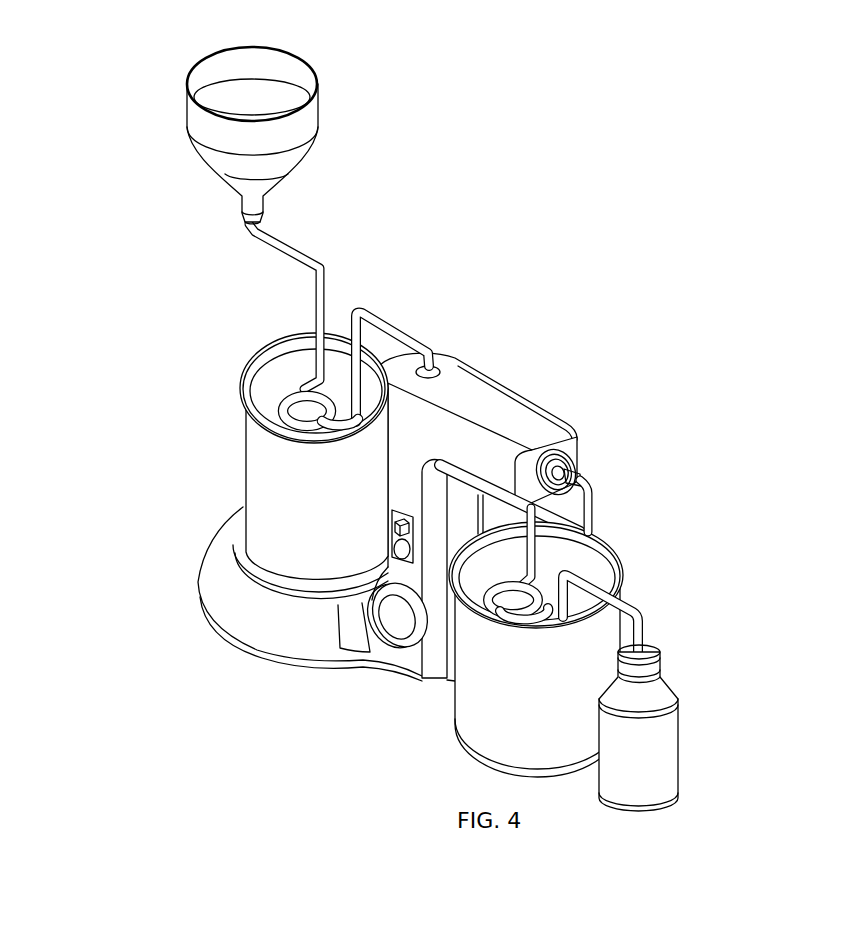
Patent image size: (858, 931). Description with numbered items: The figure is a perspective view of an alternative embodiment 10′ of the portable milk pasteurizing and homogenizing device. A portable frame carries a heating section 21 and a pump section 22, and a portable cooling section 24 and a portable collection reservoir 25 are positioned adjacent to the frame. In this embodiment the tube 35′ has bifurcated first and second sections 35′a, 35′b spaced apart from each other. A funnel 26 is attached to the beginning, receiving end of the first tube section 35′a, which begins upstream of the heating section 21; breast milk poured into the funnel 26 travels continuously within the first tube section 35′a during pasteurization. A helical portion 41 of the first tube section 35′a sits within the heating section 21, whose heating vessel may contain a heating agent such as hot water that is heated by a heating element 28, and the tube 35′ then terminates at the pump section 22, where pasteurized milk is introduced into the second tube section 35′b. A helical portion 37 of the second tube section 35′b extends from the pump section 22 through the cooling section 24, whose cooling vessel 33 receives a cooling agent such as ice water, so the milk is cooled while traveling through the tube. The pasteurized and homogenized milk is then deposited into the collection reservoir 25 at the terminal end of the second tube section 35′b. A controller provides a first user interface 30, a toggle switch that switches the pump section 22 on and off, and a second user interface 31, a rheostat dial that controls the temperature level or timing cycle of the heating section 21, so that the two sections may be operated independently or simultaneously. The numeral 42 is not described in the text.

The alternative embodiment 10′ is at (710, 157).
The heating section 21 is at (180, 525).
The pump section 22 is at (520, 379).
The portable cooling section 24 is at (647, 551).
The portable collection reservoir 25 is at (660, 748).
The funnel 26 is at (190, 128).
The heating element 28 is at (243, 562).
The first user interface 30 is at (395, 548).
The second user interface 31 is at (385, 618).
The cooling vessel 33 is at (487, 703).
The tube 35′ is at (378, 309).
The first tube section 35′a is at (322, 268).
The second tube section 35′b is at (573, 577).
The helical portion of second tube section 37 is at (488, 607).
The helical portion of first tube section 41 is at (307, 393).
The first container 42 is at (265, 485).